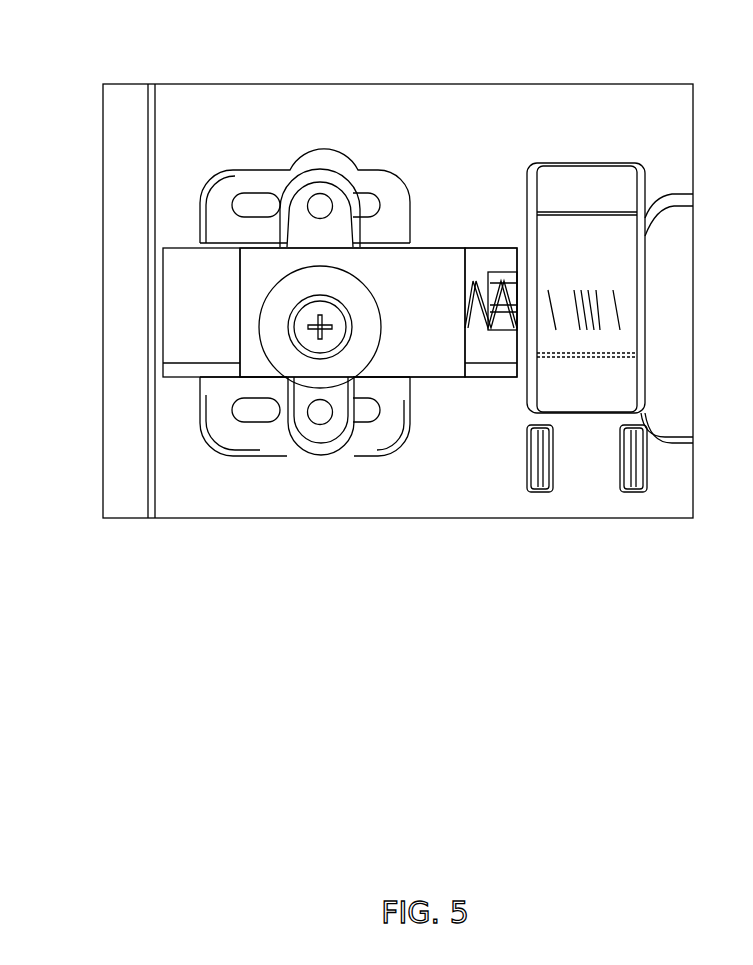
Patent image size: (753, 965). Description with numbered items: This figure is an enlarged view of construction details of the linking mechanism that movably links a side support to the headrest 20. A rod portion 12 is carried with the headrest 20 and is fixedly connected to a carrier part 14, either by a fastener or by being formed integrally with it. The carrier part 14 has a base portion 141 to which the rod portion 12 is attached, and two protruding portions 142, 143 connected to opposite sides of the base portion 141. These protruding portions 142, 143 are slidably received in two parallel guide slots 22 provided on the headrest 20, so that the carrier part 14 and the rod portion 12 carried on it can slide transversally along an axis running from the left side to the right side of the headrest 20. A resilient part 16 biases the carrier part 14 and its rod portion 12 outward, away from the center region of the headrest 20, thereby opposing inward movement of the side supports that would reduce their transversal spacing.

The rod portion 12 is at (288, 333).
The carrier part 14 is at (282, 303).
The base portion 141 is at (428, 262).
The protruding portion 142 is at (336, 195).
The protruding portion 143 is at (327, 447).
The resilient part 16 is at (499, 277).
The headrest 20 is at (624, 112).
The guide slot 22 is at (259, 192).